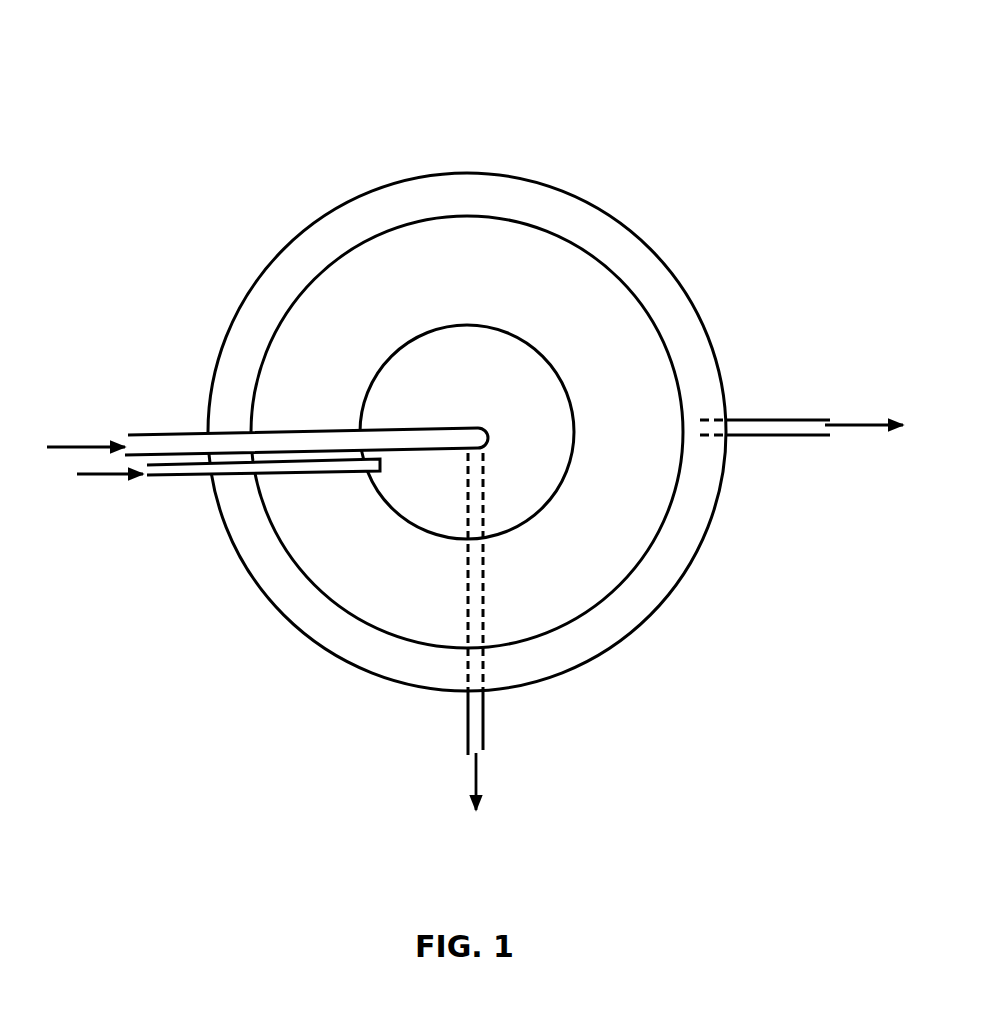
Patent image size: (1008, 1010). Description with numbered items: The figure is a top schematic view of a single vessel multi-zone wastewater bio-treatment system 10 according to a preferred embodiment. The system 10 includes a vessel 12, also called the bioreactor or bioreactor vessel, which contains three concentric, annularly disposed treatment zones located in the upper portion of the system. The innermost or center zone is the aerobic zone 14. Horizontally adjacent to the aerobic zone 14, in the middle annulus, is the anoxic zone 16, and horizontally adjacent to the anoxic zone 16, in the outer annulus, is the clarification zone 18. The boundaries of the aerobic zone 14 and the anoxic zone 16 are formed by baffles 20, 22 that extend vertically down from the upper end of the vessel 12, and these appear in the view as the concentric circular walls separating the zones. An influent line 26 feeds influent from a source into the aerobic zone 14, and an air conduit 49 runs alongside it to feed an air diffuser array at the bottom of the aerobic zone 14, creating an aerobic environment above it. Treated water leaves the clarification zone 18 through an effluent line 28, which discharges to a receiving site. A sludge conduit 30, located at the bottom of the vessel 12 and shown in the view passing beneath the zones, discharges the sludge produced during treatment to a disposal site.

The single vessel multi-zone wastewater bio-treatment system 10 is at (330, 107).
The vessel 12 is at (307, 227).
The aerobic zone 14 is at (528, 485).
The anoxic zone 16 is at (628, 348).
The clarification zone 18 is at (613, 253).
The baffle 20 is at (344, 612).
The baffle 22 is at (418, 530).
The influent line 26 is at (168, 433).
The effluent line 28 is at (785, 418).
The sludge conduit 30 is at (488, 732).
The air conduit 49 is at (170, 475).